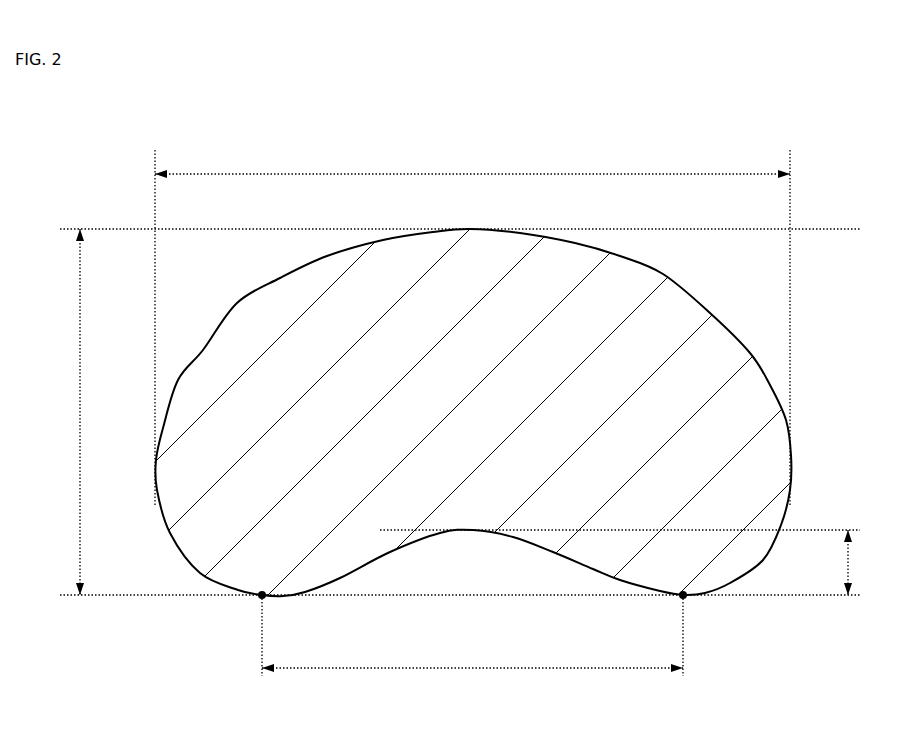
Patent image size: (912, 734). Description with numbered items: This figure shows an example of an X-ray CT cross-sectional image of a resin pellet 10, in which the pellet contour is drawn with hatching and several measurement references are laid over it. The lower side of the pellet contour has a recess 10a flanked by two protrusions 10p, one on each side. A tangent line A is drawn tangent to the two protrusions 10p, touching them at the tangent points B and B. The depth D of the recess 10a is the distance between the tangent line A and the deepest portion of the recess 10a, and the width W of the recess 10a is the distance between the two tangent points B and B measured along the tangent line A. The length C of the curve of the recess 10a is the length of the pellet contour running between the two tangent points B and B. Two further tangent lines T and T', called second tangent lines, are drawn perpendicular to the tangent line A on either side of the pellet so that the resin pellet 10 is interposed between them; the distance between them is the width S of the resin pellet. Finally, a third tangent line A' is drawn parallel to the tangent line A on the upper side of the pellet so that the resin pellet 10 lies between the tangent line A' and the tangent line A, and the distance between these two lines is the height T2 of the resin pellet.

The resin pellet 10 is at (487, 353).
The recess 10a is at (474, 552).
The protrusions 10p is at (183, 564).
The tangent points B is at (264, 597).
The length of the curve of the recess C is at (384, 562).
The depth of the recess D is at (862, 563).
The width of the recess W is at (475, 689).
The width of the resin pellet S is at (473, 159).
The height of the resin pellet T2 is at (57, 406).
The tangent line (second tangent line) T is at (176, 269).
The tangent line (second tangent line) T' is at (815, 269).
The tangent line A is at (120, 623).
The tangent line (third tangent line) A' is at (125, 204).